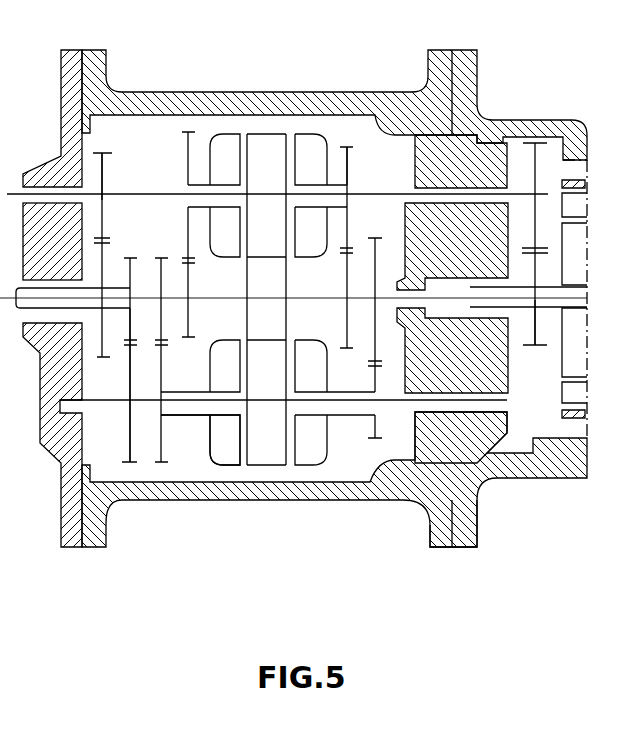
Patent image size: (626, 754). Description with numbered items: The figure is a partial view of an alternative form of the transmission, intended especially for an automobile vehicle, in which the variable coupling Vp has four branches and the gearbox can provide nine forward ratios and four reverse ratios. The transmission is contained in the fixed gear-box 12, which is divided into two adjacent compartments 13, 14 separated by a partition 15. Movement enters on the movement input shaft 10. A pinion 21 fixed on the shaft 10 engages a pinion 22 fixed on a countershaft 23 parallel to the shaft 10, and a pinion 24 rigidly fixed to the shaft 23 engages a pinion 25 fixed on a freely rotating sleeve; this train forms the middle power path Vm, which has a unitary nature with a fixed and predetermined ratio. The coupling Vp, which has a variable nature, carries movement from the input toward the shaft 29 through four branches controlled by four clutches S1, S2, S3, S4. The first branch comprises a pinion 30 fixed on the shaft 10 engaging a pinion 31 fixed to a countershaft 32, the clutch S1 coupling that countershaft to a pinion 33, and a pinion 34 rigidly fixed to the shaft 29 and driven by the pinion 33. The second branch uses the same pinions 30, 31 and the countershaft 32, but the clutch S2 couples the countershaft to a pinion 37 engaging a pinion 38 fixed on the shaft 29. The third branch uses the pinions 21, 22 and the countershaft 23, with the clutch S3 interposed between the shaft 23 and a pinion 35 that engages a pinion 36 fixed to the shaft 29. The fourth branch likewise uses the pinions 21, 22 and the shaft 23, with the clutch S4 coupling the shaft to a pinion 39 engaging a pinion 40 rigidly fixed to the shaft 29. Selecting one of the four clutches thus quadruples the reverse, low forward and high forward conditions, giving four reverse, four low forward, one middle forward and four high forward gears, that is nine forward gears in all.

The movement input shaft 10 is at (5, 288).
The fixed gear-box 12 is at (465, 547).
The compartment 13 is at (152, 473).
The compartment 14 is at (555, 152).
The partition 15 is at (467, 448).
The pinion 21 is at (105, 257).
The pinion 22 is at (104, 173).
The countershaft 23 is at (140, 194).
The pinion 24 is at (533, 158).
The pinion 25 is at (537, 347).
The shaft 29 is at (467, 300).
The pinion 30 is at (133, 277).
The pinion 31 is at (130, 376).
The countershaft 32 is at (100, 400).
The pinion 33 is at (372, 437).
The pinion 34 is at (381, 250).
The pinion 35 is at (350, 163).
The pinion 36 is at (345, 272).
The pinion 37 is at (163, 448).
The pinion 38 is at (162, 325).
The pinion 39 is at (185, 153).
The pinion 40 is at (188, 285).
The clutch S1 is at (298, 463).
The clutch S2 is at (257, 463).
The clutch S3 is at (286, 134).
The clutch S4 is at (247, 134).
The middle power path Vm is at (545, 191).
The first element coupling Vp is at (495, 292).